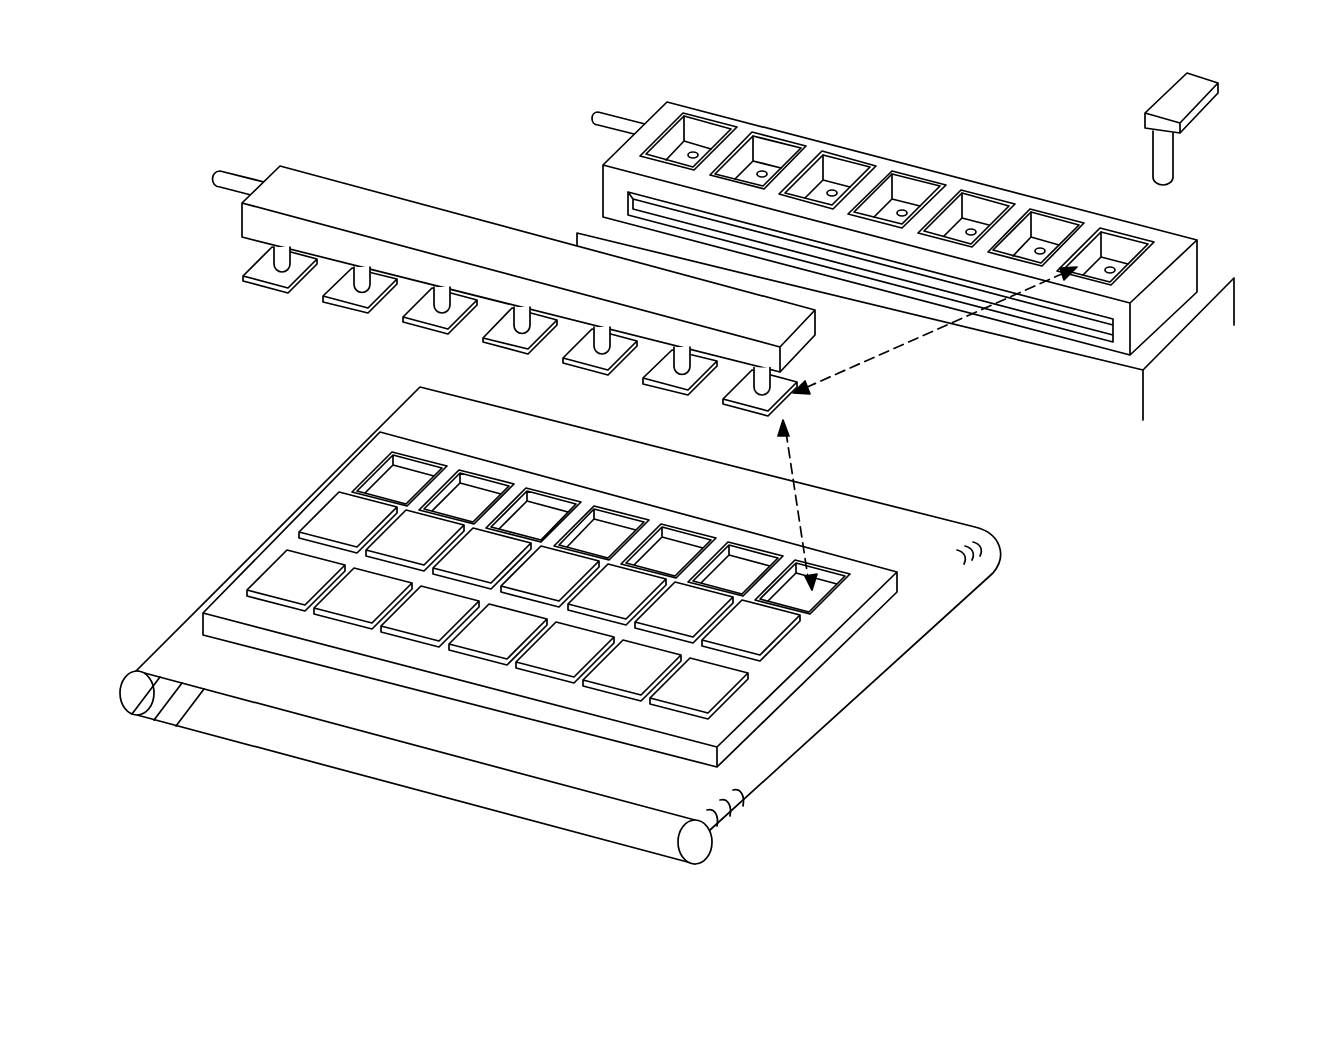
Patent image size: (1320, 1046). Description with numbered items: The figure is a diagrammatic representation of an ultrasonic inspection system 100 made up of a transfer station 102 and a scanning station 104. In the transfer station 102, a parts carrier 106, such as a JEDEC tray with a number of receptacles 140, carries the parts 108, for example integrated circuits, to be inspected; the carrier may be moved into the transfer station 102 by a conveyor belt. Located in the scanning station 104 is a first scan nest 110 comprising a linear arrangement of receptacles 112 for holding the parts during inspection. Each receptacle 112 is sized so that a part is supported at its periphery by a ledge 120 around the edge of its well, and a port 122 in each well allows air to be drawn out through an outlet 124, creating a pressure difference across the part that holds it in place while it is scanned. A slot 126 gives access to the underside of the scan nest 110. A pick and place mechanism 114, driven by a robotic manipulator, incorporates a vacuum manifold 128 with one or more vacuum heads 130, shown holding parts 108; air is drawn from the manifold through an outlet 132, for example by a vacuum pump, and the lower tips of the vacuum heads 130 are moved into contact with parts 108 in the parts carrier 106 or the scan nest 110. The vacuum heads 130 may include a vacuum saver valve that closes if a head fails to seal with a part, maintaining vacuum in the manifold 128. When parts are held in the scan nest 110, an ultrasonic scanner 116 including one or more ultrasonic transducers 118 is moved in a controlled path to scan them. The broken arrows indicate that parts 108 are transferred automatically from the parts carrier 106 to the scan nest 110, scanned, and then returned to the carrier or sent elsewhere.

The ultrasonic inspection system 100 is at (1072, 533).
The transfer station 102 is at (930, 638).
The scanning station 104 is at (1185, 333).
The parts carrier 106 is at (315, 497).
The parts 108 is at (262, 290).
The first scan nest 110 is at (896, 225).
The receptacles 112 is at (712, 137).
The pick and place mechanism 114 is at (494, 266).
The ultrasonic scanner 116 is at (1208, 106).
The ultrasonic transducers 118 is at (1175, 160).
The ledge 120 is at (783, 145).
The port 122 is at (690, 157).
The outlet 124 is at (593, 114).
The slot 126 is at (647, 204).
The vacuum manifold 128 is at (353, 188).
The vacuum heads 130 is at (282, 264).
The outlet 132 is at (242, 172).
The receptacles 140 is at (543, 508).